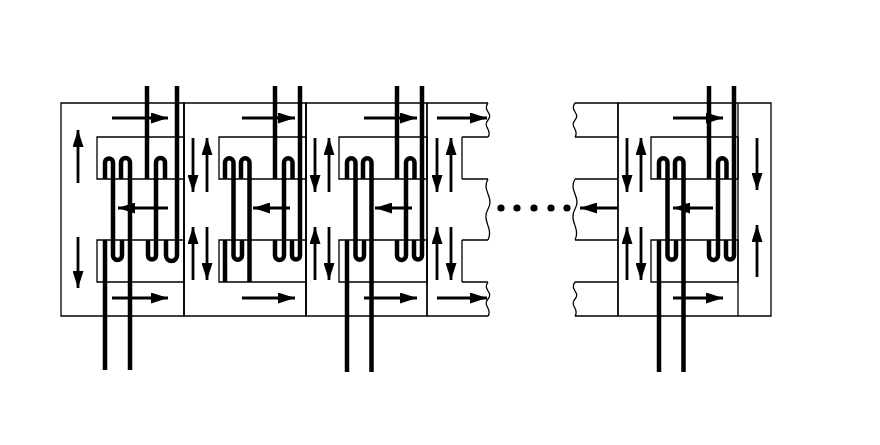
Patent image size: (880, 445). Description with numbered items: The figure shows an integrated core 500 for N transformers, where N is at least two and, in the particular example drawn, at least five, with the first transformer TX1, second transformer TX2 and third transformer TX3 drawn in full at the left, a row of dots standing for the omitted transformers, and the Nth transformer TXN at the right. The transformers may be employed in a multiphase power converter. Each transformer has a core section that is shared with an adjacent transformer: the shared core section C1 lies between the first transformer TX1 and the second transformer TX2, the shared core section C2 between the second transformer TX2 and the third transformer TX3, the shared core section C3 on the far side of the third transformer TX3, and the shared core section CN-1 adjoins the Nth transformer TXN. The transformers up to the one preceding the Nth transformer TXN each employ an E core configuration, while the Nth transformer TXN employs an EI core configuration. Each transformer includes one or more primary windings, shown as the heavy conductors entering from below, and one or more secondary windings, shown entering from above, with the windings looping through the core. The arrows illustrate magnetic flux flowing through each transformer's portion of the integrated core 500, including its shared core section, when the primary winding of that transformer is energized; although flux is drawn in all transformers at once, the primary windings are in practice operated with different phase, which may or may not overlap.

The integrated core 500 is at (400, 219).
The first transformer TX1 is at (122, 226).
The second transformer TX2 is at (245, 199).
The third transformer TX3 is at (366, 227).
The Nth transformer TXN is at (694, 227).
The shared core section C1 is at (203, 302).
The shared core section C2 is at (320, 302).
The shared core section C3 is at (441, 306).
The shared core section CN-1 is at (648, 277).